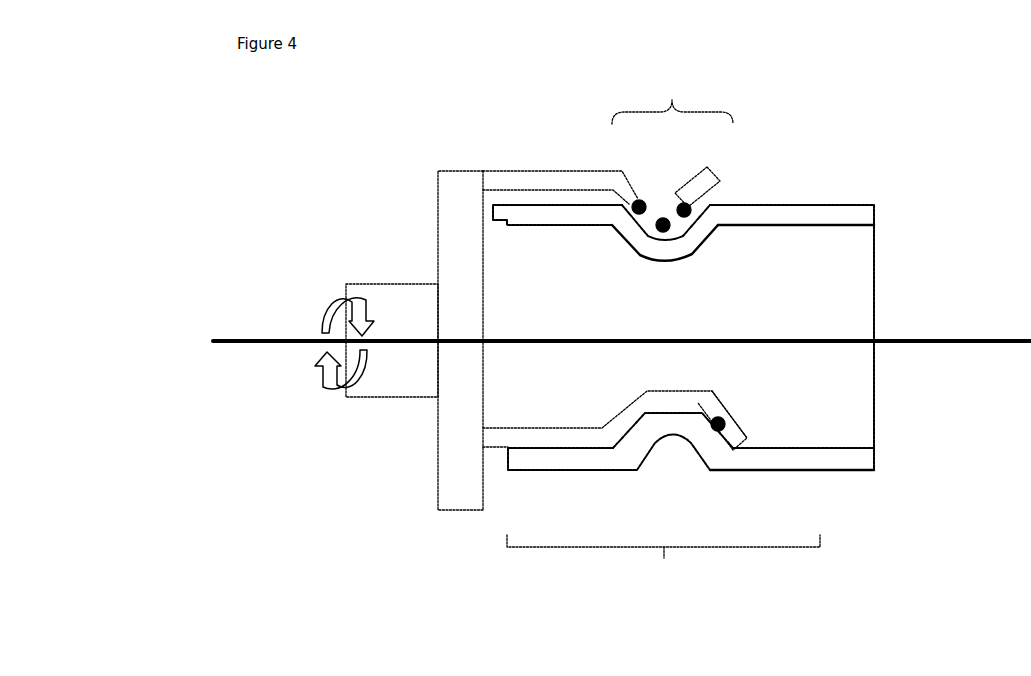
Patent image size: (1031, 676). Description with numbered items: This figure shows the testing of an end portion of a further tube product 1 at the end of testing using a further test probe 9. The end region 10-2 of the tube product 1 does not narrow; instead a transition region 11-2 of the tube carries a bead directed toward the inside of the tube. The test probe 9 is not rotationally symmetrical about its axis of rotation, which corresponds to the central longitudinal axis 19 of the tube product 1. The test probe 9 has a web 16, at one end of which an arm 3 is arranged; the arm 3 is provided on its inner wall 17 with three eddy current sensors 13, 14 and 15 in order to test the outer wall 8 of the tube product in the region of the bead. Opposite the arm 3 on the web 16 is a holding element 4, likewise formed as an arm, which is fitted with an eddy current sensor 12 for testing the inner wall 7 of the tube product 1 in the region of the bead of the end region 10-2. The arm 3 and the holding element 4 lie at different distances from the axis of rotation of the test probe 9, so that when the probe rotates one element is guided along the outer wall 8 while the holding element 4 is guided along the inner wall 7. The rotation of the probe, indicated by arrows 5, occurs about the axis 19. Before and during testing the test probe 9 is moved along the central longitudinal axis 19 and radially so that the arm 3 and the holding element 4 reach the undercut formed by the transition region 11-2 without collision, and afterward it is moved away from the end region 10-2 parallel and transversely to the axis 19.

The tube product 1 is at (856, 176).
The arm 3 is at (583, 178).
The holding element 4 is at (627, 422).
The rotation of die 5 is at (333, 302).
The inner wall 7 is at (643, 265).
The outer wall 8 is at (655, 219).
The test probe 9 is at (414, 172).
The end region 10-2 is at (663, 517).
The transition region 11-2 is at (672, 98).
The eddy current sensor 12 is at (731, 419).
The eddy current sensor 13 is at (634, 203).
The eddy current sensor 14 is at (664, 217).
The eddy current sensor 15 is at (692, 194).
The web 16 is at (453, 413).
The inner wall 17 is at (616, 207).
The central longitudinal axis 19 is at (254, 344).